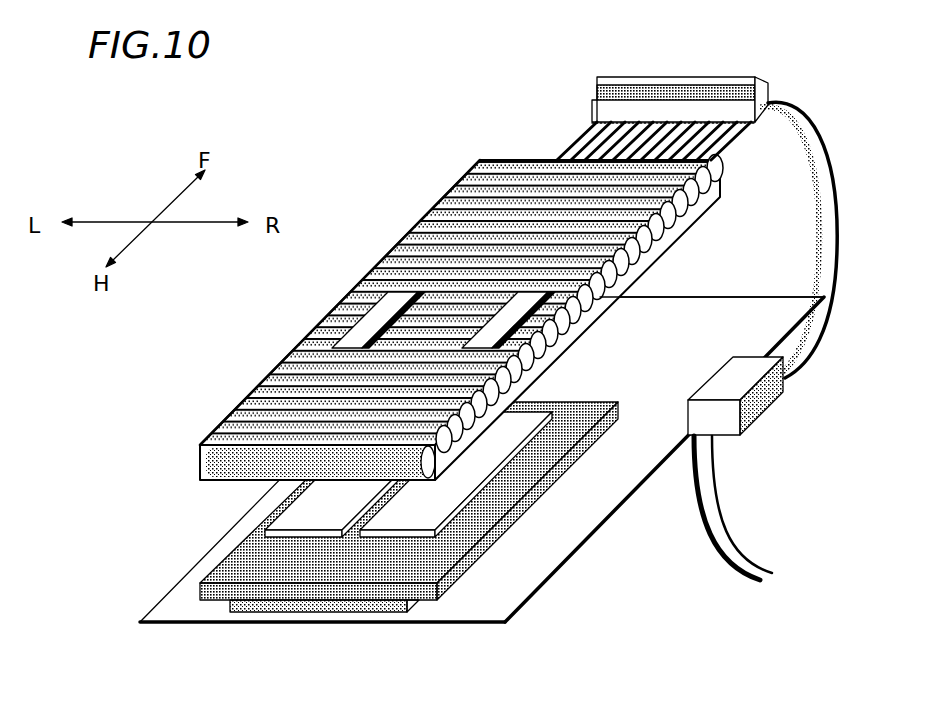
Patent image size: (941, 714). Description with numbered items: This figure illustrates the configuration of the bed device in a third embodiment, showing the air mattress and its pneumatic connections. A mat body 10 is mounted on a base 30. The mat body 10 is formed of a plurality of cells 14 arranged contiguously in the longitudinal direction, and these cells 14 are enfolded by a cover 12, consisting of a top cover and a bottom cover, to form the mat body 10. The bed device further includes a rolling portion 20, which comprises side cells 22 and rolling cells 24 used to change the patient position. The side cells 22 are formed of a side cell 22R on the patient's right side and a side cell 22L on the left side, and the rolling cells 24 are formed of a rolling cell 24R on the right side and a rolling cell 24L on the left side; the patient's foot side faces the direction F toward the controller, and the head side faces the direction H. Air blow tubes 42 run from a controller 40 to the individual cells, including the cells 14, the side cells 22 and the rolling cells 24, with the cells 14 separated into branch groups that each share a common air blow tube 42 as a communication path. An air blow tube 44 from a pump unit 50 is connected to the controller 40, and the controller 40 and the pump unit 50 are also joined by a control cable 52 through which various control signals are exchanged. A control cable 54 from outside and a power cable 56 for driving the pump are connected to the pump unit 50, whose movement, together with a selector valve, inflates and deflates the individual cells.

The mat body 10 is at (396, 304).
The cover 12 is at (447, 197).
The cell 14 is at (453, 238).
The rolling portion 20 is at (366, 341).
The side cells 22 is at (312, 380).
The side cell 22L is at (367, 320).
The side cell 22R is at (493, 330).
The rolling cells 24 is at (312, 483).
The rolling cell 24L is at (340, 529).
The rolling cell 24R is at (410, 517).
The base 30 is at (300, 605).
The controller 40 is at (735, 80).
The air blow tube 42 is at (595, 133).
The air blow tube 44 is at (797, 142).
The pump unit 50 is at (757, 407).
The control cable 52 is at (825, 150).
The control cable 54 is at (713, 491).
The power cable 56 is at (702, 502).